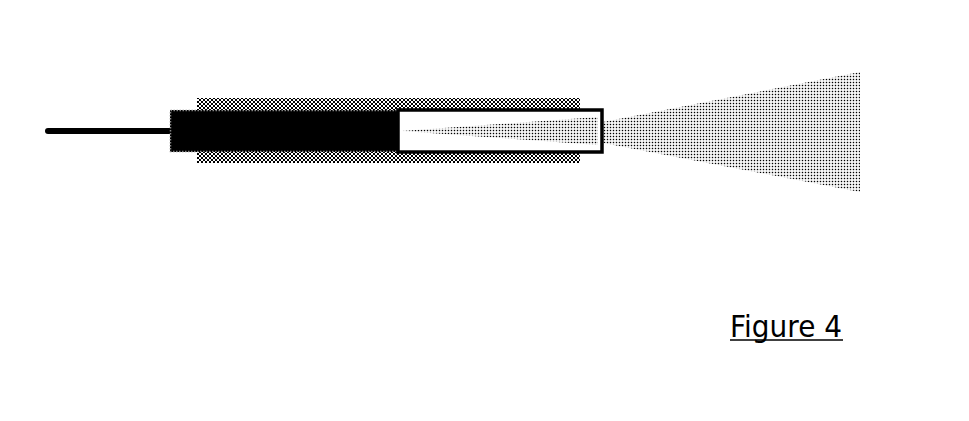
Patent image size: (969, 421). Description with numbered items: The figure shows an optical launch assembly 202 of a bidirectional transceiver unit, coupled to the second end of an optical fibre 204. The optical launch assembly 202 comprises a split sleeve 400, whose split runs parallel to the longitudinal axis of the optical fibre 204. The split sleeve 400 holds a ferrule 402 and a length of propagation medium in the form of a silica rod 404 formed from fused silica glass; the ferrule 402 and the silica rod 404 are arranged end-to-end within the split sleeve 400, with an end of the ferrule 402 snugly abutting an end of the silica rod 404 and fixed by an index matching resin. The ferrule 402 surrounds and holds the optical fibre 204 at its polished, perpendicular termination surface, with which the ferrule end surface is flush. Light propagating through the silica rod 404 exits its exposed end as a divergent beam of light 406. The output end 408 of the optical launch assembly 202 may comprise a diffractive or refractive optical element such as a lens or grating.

The optical launch assembly 202 is at (467, 98).
The optical fibre 204 is at (137, 127).
The split sleeve 400 is at (417, 163).
The ferrule 402 is at (187, 150).
The silica rod 404 is at (592, 152).
The divergent beam of light 406 is at (723, 100).
The output end 408 is at (605, 124).